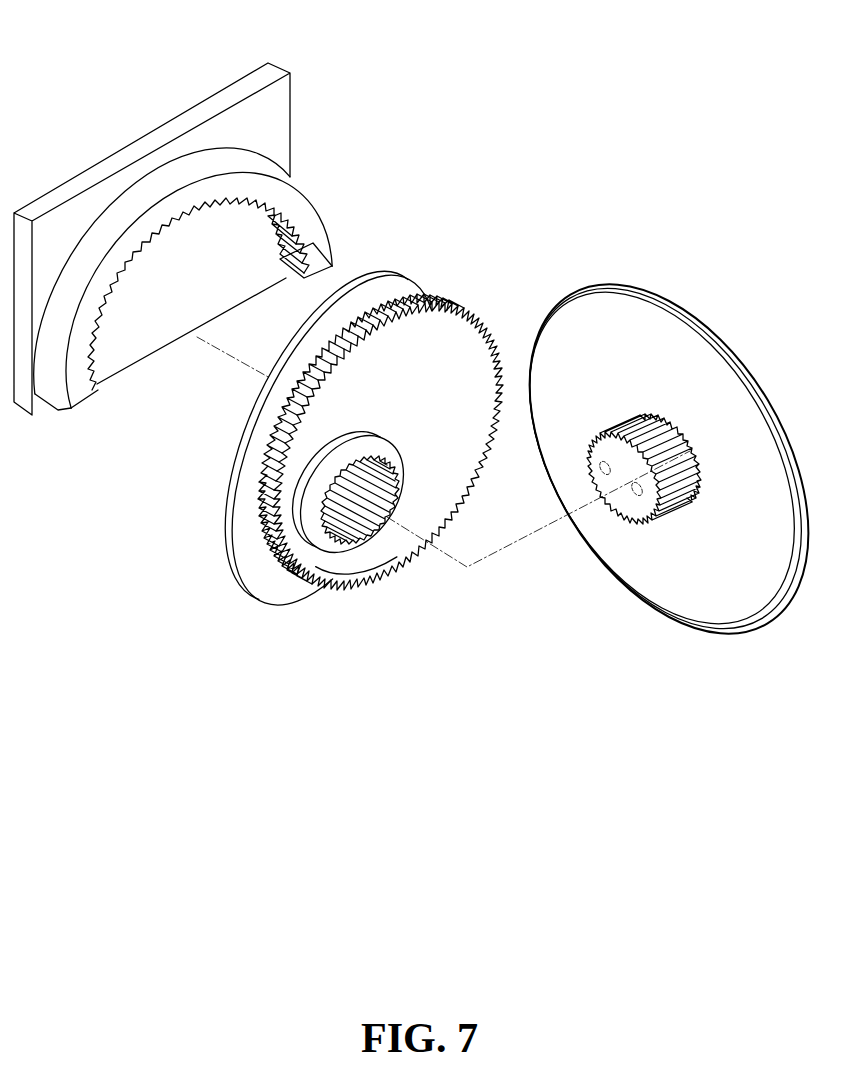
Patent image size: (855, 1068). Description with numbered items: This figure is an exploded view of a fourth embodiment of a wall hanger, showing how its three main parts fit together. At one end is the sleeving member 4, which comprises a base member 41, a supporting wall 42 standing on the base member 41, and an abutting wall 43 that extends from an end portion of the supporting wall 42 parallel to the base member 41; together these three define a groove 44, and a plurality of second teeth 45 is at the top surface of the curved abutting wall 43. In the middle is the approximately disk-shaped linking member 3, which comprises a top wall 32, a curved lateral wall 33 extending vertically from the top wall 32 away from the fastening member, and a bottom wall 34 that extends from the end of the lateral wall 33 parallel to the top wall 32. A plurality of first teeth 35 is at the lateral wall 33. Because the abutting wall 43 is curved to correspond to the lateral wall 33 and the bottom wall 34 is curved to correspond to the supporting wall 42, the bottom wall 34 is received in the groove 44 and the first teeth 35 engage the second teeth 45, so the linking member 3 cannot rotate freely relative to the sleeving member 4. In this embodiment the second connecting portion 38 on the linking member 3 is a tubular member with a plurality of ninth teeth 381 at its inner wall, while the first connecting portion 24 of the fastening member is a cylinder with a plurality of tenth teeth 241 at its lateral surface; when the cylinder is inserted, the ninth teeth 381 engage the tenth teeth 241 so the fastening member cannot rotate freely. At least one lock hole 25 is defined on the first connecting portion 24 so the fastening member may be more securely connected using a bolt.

The sleeving member 4 is at (300, 97).
The base member 41 is at (52, 223).
The supporting wall 42 is at (178, 173).
The abutting wall 43 is at (312, 223).
The groove 44 is at (279, 243).
The second teeth 45 is at (113, 313).
The linking member 3 is at (418, 262).
The bottom wall 34 is at (420, 300).
The top wall 32 is at (427, 330).
The lateral wall 33 is at (278, 528).
The first teeth 35 is at (293, 553).
The second connecting portion 38 is at (373, 543).
The ninth teeth 381 is at (330, 553).
The first connecting portion 24 is at (613, 522).
The tenth teeth 241 is at (673, 497).
The lock hole 25 is at (600, 469).